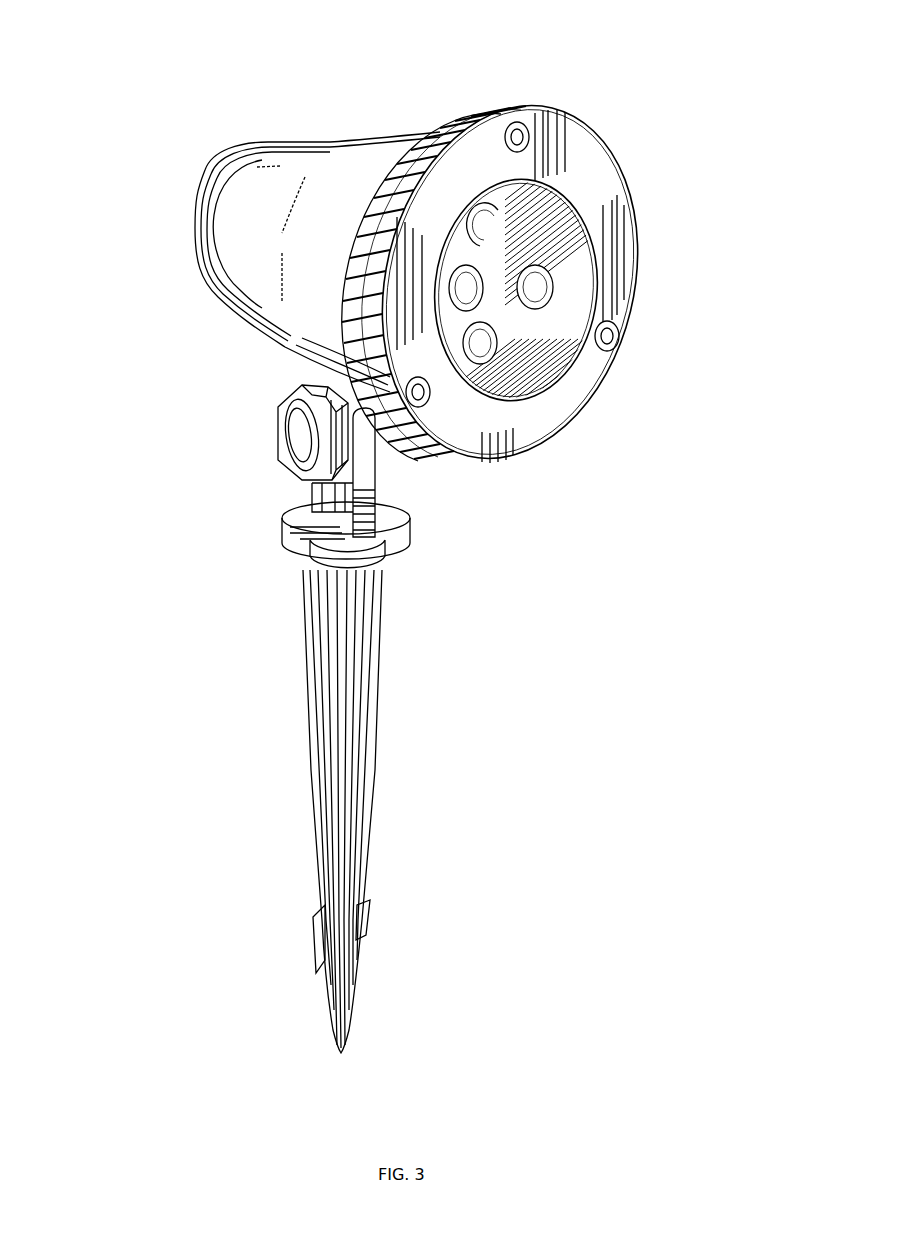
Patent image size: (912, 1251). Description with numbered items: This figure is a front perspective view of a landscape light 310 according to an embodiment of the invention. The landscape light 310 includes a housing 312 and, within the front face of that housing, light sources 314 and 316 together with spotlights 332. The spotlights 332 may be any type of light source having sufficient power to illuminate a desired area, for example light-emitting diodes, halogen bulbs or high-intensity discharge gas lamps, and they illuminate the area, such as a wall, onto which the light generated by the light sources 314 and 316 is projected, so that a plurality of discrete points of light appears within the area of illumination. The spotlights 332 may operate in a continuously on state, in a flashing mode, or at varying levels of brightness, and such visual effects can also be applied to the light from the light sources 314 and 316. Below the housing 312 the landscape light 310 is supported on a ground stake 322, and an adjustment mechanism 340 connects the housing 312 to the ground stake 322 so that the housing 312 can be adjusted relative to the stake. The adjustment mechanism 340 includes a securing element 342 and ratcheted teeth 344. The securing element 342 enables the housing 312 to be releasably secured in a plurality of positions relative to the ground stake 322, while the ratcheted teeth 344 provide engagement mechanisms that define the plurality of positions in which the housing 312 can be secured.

The landscape light 310 is at (92, 36).
The housing 312 is at (282, 140).
The light source 314 is at (449, 289).
The light source 316 is at (535, 272).
The ground stake 322 is at (388, 773).
The spotlights 332 is at (500, 205).
The adjustment mechanism 340 is at (238, 452).
The securing element 342 is at (298, 457).
The ratcheted teeth 344 is at (385, 440).